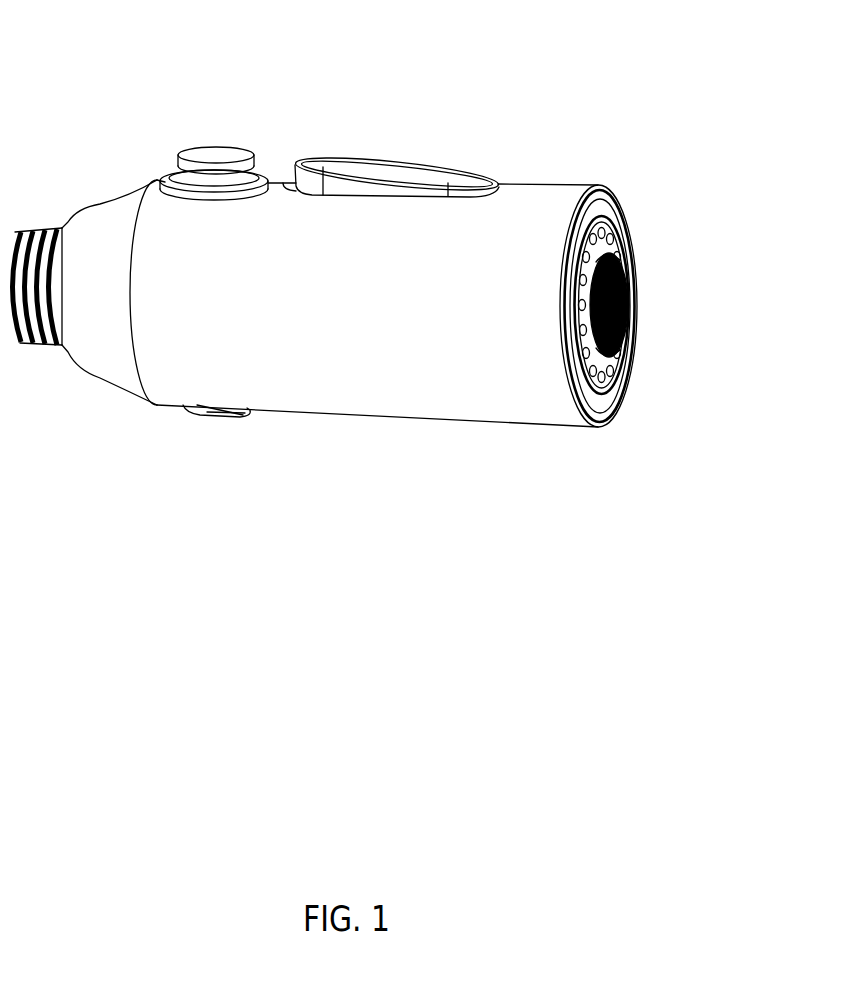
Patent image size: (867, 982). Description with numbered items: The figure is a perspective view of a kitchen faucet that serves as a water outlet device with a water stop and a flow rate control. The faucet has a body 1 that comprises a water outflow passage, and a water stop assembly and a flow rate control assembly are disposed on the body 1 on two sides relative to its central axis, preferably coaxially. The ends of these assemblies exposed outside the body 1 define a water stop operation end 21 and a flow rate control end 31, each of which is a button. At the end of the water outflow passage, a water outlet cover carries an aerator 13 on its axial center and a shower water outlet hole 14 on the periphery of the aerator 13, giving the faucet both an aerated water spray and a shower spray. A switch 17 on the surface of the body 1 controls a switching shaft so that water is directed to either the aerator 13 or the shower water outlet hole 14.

The body 1 is at (335, 383).
The aerator 13 is at (628, 293).
The shower water outlet hole 14 is at (615, 233).
The switch 17 is at (345, 157).
The water stop operation end 21 is at (203, 408).
The flow rate control end 31 is at (217, 153).